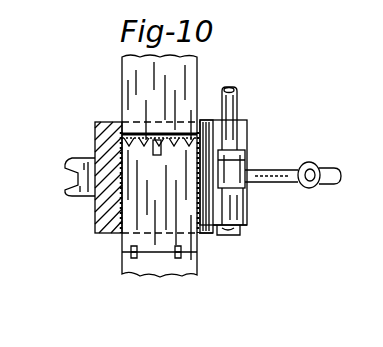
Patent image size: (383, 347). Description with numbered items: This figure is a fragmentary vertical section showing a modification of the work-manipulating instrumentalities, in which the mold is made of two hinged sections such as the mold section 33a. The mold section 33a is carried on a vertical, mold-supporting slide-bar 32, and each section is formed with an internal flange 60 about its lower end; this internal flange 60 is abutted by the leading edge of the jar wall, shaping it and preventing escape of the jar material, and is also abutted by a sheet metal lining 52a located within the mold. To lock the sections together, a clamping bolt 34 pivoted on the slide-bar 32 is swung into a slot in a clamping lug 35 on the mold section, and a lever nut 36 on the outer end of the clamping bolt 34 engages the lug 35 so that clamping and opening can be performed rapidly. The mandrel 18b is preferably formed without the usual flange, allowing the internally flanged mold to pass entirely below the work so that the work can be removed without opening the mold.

The mandrel 18b is at (160, 200).
The clamping lug 35 is at (77, 197).
The internal flange 60 is at (203, 233).
The slide-bar 32 is at (232, 104).
The sheet metal lining 52a is at (208, 122).
The hinged mold section 33a is at (210, 142).
The clamping bolt 34 is at (265, 176).
The lever nut 36 is at (317, 170).